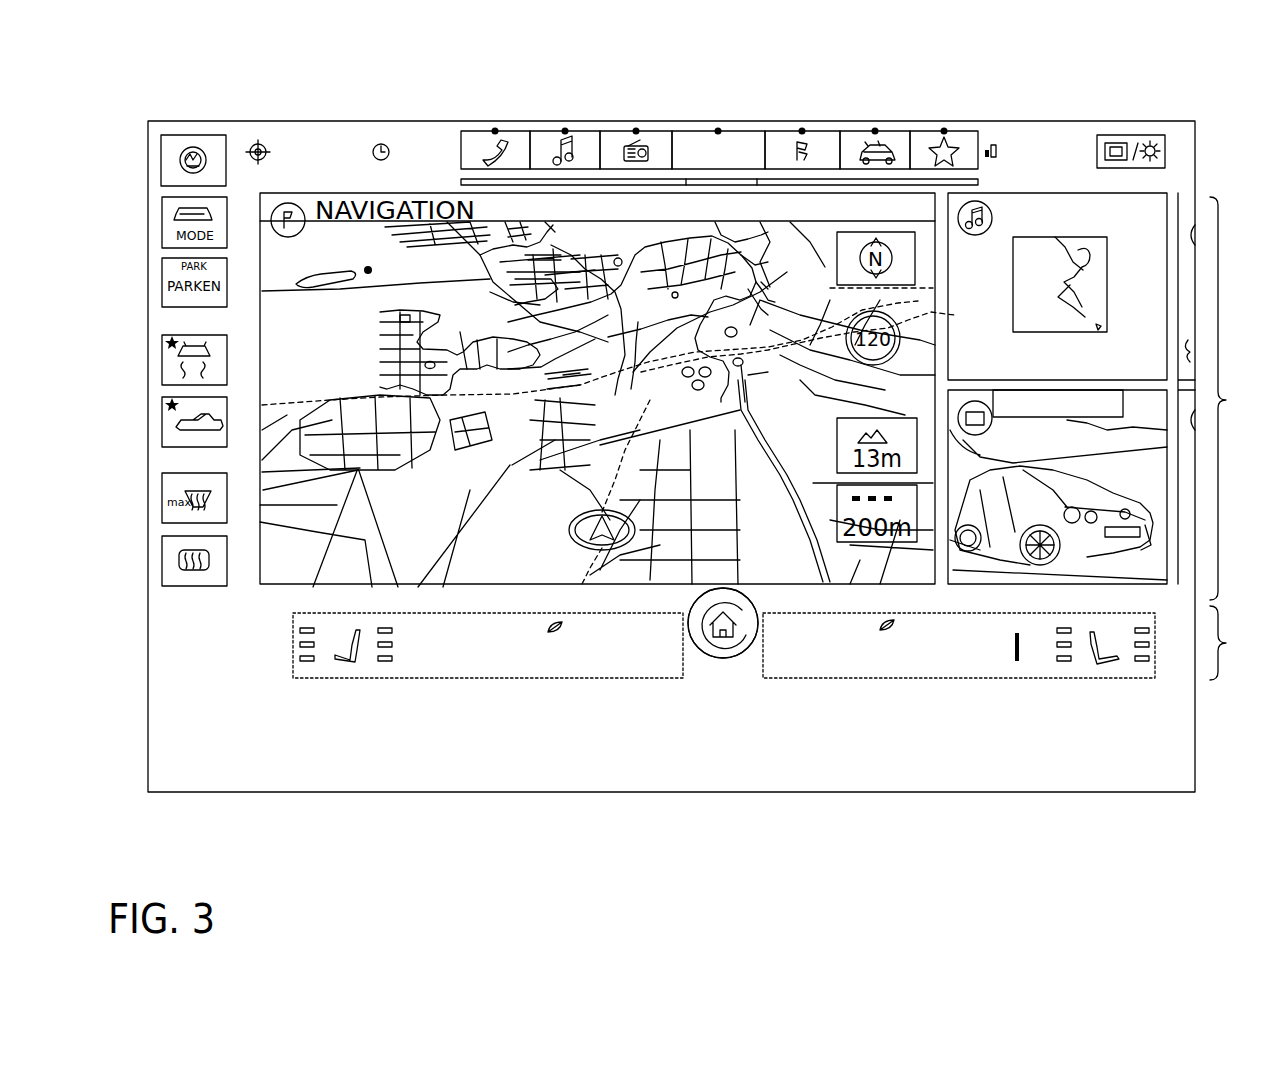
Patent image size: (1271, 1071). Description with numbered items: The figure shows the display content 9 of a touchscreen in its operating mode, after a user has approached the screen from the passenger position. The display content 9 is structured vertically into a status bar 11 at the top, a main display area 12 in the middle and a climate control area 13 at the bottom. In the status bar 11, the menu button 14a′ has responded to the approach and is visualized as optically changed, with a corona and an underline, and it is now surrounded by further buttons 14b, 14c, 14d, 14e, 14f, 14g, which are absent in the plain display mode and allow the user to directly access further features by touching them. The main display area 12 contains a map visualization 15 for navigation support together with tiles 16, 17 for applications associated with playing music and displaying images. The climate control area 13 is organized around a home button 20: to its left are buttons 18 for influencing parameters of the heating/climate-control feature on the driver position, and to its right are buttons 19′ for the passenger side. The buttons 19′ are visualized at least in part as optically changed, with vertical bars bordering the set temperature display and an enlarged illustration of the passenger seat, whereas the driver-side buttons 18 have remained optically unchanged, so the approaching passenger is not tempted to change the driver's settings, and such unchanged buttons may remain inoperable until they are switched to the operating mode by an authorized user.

The display content 9 is at (1046, 88).
The status bar 11 is at (1210, 122).
The main display area 12 is at (1057, 484).
The climate control area 13 is at (723, 623).
The button 14a′ is at (718, 113).
The button 14b is at (495, 113).
The button 14c is at (565, 113).
The button 14d is at (636, 113).
The button 14e is at (802, 113).
The button 14f is at (875, 113).
The button 14g is at (945, 113).
The map visualization 15 is at (350, 113).
The tile 16 is at (1131, 282).
The tile 17 is at (1149, 532).
The buttons 18 is at (438, 678).
The buttons 19′ is at (980, 678).
The home button 20 is at (724, 650).